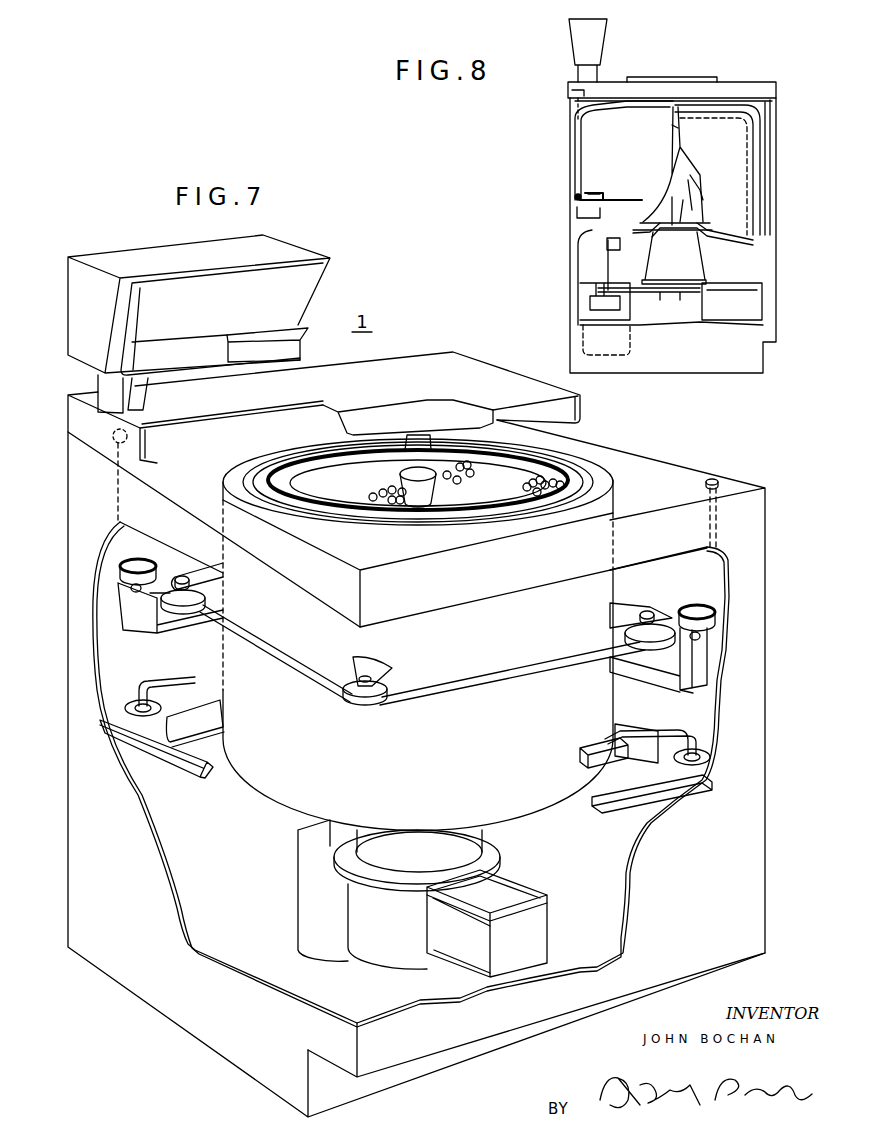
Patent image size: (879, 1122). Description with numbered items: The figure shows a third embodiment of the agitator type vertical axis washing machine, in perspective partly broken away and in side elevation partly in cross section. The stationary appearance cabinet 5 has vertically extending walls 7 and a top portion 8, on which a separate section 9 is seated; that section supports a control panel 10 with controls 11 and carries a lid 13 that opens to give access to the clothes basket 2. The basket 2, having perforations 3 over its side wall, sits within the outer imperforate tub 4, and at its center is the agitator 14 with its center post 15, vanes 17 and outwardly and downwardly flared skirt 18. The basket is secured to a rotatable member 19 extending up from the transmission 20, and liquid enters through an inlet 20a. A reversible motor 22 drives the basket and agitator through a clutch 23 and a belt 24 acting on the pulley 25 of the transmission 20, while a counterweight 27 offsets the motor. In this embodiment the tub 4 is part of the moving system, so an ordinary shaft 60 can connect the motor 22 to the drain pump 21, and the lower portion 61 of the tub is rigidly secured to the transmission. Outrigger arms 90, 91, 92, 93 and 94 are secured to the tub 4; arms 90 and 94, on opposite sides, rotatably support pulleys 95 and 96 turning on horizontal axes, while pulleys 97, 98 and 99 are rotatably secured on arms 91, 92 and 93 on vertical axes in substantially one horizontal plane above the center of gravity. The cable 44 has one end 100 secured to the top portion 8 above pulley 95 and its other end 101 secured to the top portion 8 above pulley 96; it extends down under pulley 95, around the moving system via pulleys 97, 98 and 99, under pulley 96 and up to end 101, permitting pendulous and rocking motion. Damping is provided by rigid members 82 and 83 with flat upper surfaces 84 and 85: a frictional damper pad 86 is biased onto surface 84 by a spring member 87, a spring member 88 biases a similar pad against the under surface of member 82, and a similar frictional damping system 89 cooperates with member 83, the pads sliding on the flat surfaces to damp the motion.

In FIG. 7, the clothes basket 2 is at (493, 490).
In FIG. 8, the clothes basket 2 is at (745, 160).
In FIG. 7, the perforations 3 is at (556, 481).
In FIG. 8, the perforations 3 is at (756, 141).
In FIG. 7, the tub 4 is at (537, 810).
In FIG. 8, the tub 4 is at (755, 238).
In FIG. 7, the appearance cabinet 5 is at (742, 529).
In FIG. 7, the vertically extending walls 7 is at (645, 467).
In FIG. 7, the top portion 8 is at (355, 550).
In FIG. 7, the separate section 9 is at (462, 352).
In FIG. 8, the separate section 9 is at (755, 85).
In FIG. 7, the control panel 10 is at (152, 250).
In FIG. 8, the control panel 10 is at (598, 32).
In FIG. 7, the controls 11 is at (285, 325).
In FIG. 8, the lid 13 is at (683, 80).
In FIG. 7, the agitator 14 is at (410, 500).
In FIG. 8, the agitator 14 is at (673, 147).
In FIG. 8, the center post 15 is at (675, 128).
In FIG. 8, the vanes 17 is at (697, 178).
In FIG. 8, the skirt 18 is at (712, 222).
In FIG. 8, the rotatable member 19 is at (672, 228).
In FIG. 7, the transmission 20 is at (400, 940).
In FIG. 8, the transmission 20 is at (700, 262).
In FIG. 7, the inlet 20a is at (421, 440).
In FIG. 8, the pump 21 is at (607, 246).
In FIG. 7, the reversible motor 22 is at (333, 952).
In FIG. 8, the reversible motor 22 is at (590, 326).
In FIG. 8, the clutch 23 is at (602, 294).
In FIG. 8, the belt 24 is at (645, 292).
In FIG. 8, the pulley 25 is at (682, 300).
In FIG. 7, the counterweight 27 is at (455, 987).
In FIG. 7, the cable 44 is at (476, 680).
In FIG. 8, the cable 44 is at (583, 147).
In FIG. 8, the shaft 60 is at (607, 269).
In FIG. 8, the lower portion of the tub 61 is at (645, 238).
In FIG. 7, the rigid member 82 is at (172, 760).
In FIG. 7, the rigid member 83 is at (622, 822).
In FIG. 7, the flat upper surface 84 is at (176, 724).
In FIG. 7, the flat upper surface 85 is at (718, 760).
In FIG. 7, the frictional damper pad 86 is at (118, 726).
In FIG. 7, the spring member 87 is at (159, 692).
In FIG. 7, the spring member 88 is at (208, 733).
In FIG. 7, the frictional damping system 89 is at (583, 758).
In FIG. 7, the outrigger arm 90 is at (150, 632).
In FIG. 8, the outrigger arm 90 is at (600, 215).
In FIG. 7, the outrigger arm 91 is at (222, 592).
In FIG. 8, the outrigger arm 91 is at (602, 192).
In FIG. 7, the outrigger arm 92 is at (380, 661).
In FIG. 7, the outrigger arm 93 is at (630, 606).
In FIG. 7, the outrigger arm 94 is at (684, 698).
In FIG. 8, the outrigger arm 94 is at (772, 207).
In FIG. 7, the pulley 95 is at (124, 562).
In FIG. 8, the pulley 95 is at (575, 199).
In FIG. 7, the pulley 96 is at (695, 606).
In FIG. 7, the pulley 97 is at (178, 576).
In FIG. 7, the pulley 98 is at (357, 708).
In FIG. 7, the pulley 99 is at (632, 642).
In FIG. 7, the cable end 100 is at (116, 443).
In FIG. 8, the cable end 100 is at (577, 95).
In FIG. 7, the cable end 101 is at (720, 481).